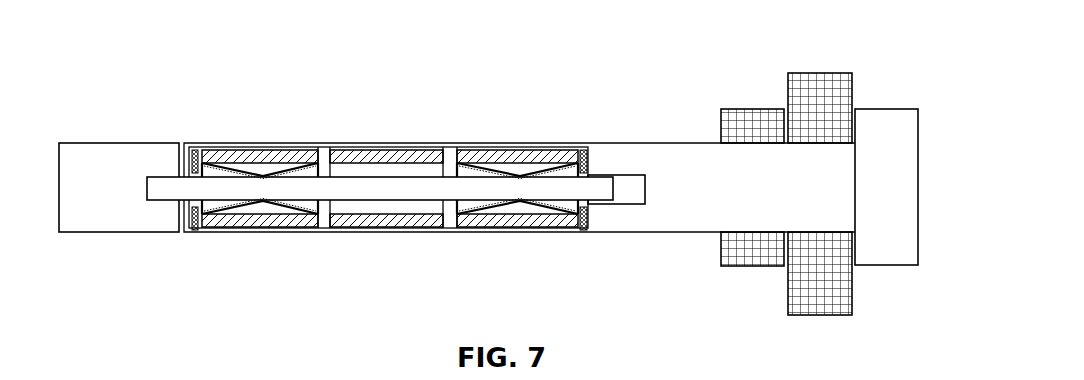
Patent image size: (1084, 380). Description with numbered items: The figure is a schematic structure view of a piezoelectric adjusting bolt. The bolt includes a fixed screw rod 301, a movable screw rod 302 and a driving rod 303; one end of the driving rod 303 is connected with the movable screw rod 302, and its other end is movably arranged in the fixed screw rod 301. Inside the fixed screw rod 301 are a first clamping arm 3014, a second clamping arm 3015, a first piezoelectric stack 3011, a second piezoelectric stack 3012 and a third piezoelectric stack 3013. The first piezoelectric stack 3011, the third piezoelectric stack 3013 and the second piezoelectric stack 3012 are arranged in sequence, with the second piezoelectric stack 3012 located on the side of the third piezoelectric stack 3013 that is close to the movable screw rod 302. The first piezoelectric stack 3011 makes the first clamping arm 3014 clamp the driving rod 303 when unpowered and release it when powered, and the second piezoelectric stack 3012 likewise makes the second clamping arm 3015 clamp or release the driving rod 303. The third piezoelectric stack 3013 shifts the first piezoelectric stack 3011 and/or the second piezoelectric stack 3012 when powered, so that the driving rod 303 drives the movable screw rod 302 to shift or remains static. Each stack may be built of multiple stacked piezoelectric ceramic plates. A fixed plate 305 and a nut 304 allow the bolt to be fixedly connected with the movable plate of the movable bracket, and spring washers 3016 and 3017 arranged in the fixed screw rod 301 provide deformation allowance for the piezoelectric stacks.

The fixed screw rod 301 is at (888, 127).
The movable screw rod 302 is at (100, 155).
The driving rod 303 is at (163, 188).
The nut 304 is at (732, 120).
The fixed plate 305 is at (817, 98).
The first piezoelectric stack 3011 is at (478, 155).
The second piezoelectric stack 3012 is at (228, 155).
The third piezoelectric stack 3013 is at (397, 158).
The first clamping arm 3014 is at (558, 167).
The second clamping arm 3015 is at (297, 172).
The spring washer 3016 is at (583, 227).
The spring washer 3017 is at (195, 223).